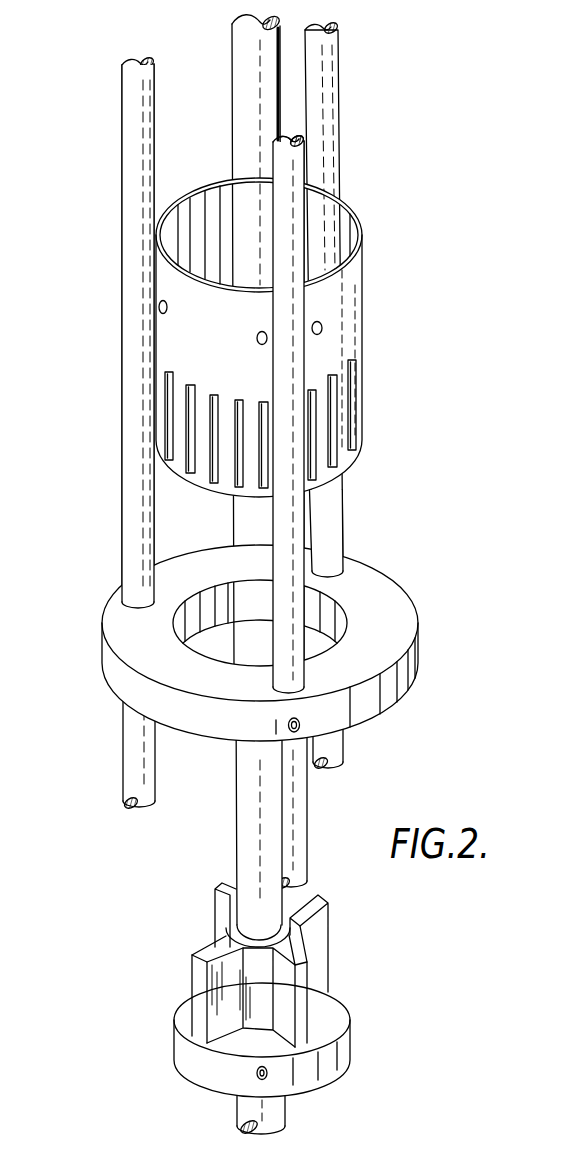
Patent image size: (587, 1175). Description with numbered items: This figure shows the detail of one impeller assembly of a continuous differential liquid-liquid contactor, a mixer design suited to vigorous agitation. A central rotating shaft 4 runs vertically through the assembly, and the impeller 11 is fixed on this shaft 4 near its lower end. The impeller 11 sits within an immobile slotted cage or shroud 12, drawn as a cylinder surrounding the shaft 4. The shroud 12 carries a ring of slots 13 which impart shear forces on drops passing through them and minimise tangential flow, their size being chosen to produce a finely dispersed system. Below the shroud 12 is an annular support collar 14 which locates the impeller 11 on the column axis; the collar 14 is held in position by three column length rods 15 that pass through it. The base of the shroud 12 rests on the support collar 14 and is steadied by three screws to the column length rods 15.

The central rotating shaft 4 is at (248, 834).
The impeller 11 is at (195, 975).
The slotted cage or shroud 12 is at (183, 352).
The slots 13 is at (190, 430).
The support collar 14 is at (118, 637).
The column length rods 15 is at (288, 573).